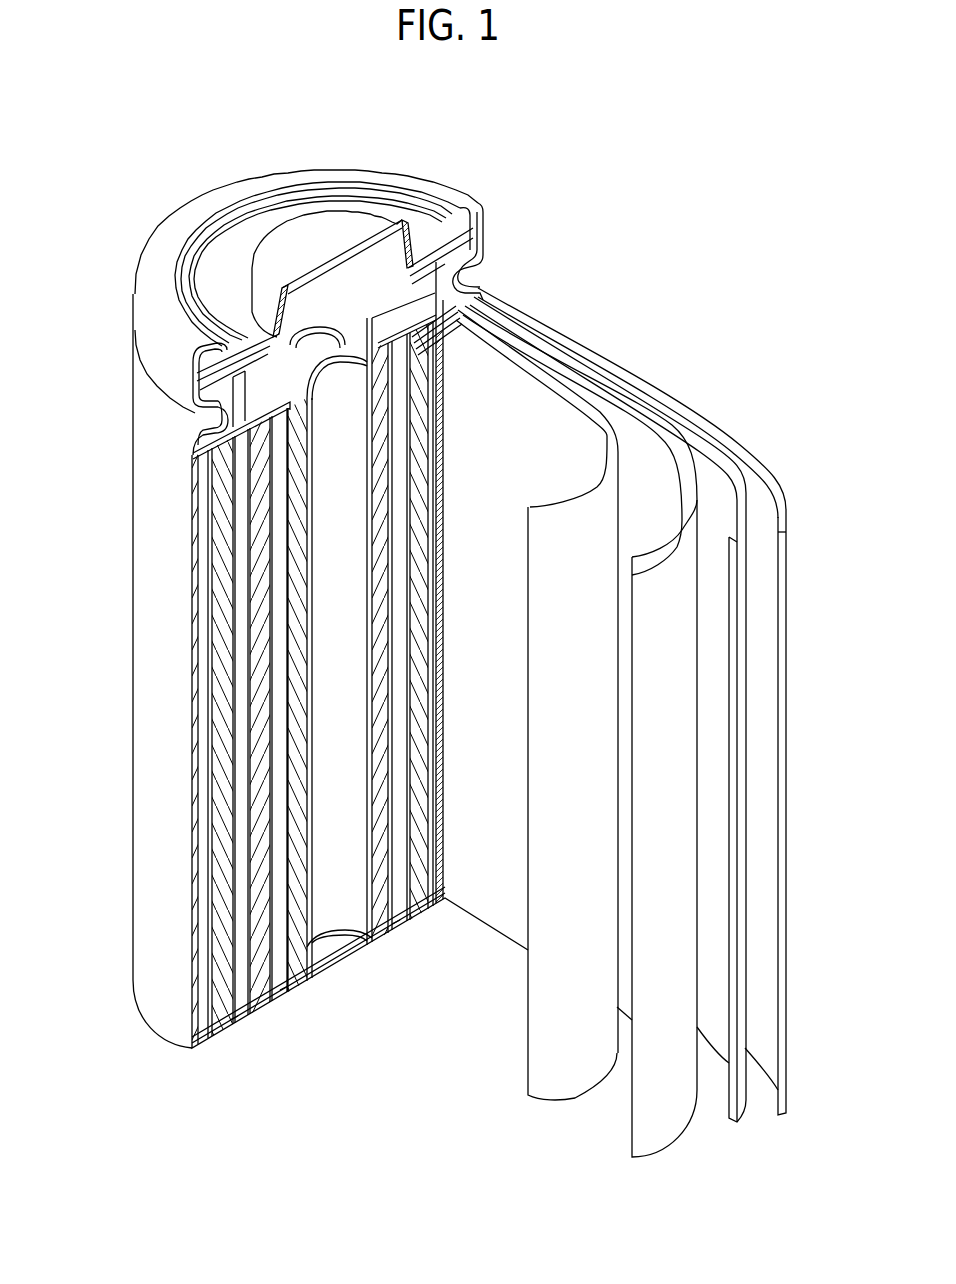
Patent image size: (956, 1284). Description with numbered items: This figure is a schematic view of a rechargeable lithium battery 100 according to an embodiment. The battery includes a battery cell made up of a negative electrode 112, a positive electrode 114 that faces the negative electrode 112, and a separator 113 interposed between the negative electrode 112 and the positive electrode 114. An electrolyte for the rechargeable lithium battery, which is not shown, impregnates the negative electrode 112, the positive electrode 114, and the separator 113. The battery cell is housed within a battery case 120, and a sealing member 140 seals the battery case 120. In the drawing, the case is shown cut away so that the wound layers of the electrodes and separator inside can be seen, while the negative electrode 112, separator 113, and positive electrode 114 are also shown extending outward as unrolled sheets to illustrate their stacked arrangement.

The rechargeable lithium battery 100 is at (479, 165).
The battery case 120 is at (142, 657).
The sealing member 140 is at (290, 222).
The negative electrode 112 is at (750, 460).
The separator 113 is at (500, 368).
The positive electrode 114 is at (633, 428).